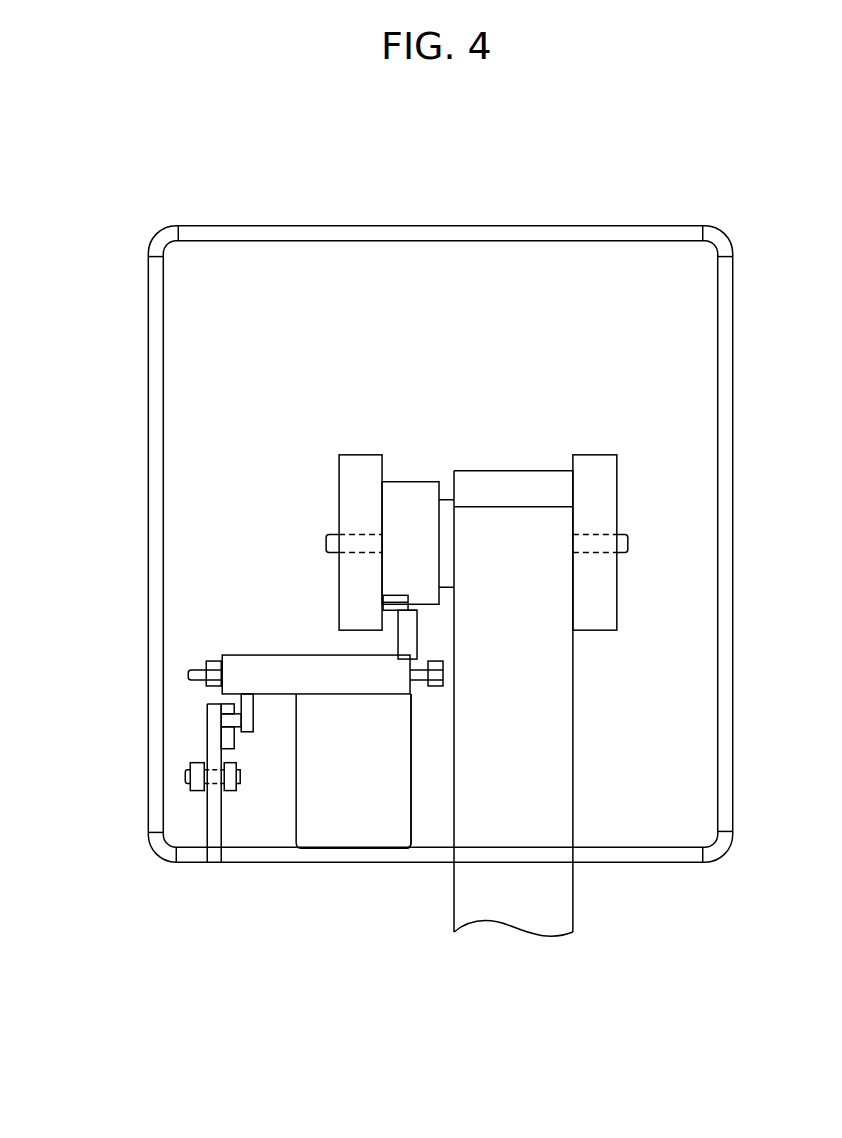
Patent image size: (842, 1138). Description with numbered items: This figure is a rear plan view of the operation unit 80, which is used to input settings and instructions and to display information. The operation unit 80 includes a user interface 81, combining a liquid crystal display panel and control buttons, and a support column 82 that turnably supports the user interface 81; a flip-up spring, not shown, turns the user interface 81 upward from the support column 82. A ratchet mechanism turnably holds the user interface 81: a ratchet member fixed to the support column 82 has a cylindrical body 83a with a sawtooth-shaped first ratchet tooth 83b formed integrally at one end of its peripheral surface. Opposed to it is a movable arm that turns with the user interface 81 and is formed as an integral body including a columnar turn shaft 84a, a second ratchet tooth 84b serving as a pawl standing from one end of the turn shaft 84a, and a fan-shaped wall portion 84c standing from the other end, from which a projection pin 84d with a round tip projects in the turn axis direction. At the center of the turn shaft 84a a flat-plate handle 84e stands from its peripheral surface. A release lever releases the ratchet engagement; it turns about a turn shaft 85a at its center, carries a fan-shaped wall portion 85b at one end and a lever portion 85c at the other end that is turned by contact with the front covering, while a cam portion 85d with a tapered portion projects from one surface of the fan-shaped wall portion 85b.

The operation unit 80 is at (114, 294).
The user interface 81 is at (147, 428).
The support column 82 is at (503, 530).
The cylindrical body 83a is at (417, 527).
The first ratchet tooth 83b is at (392, 596).
The turn shaft 84a is at (321, 678).
The second ratchet tooth 84b is at (403, 637).
The fan-shaped wall portion 84c is at (248, 702).
The projection pin 84d is at (232, 722).
The handle 84e is at (370, 812).
The turn shaft 85a is at (187, 780).
The fan-shaped wall portion 85b is at (212, 727).
The lever portion 85c is at (212, 820).
The cam portion 85d is at (226, 745).